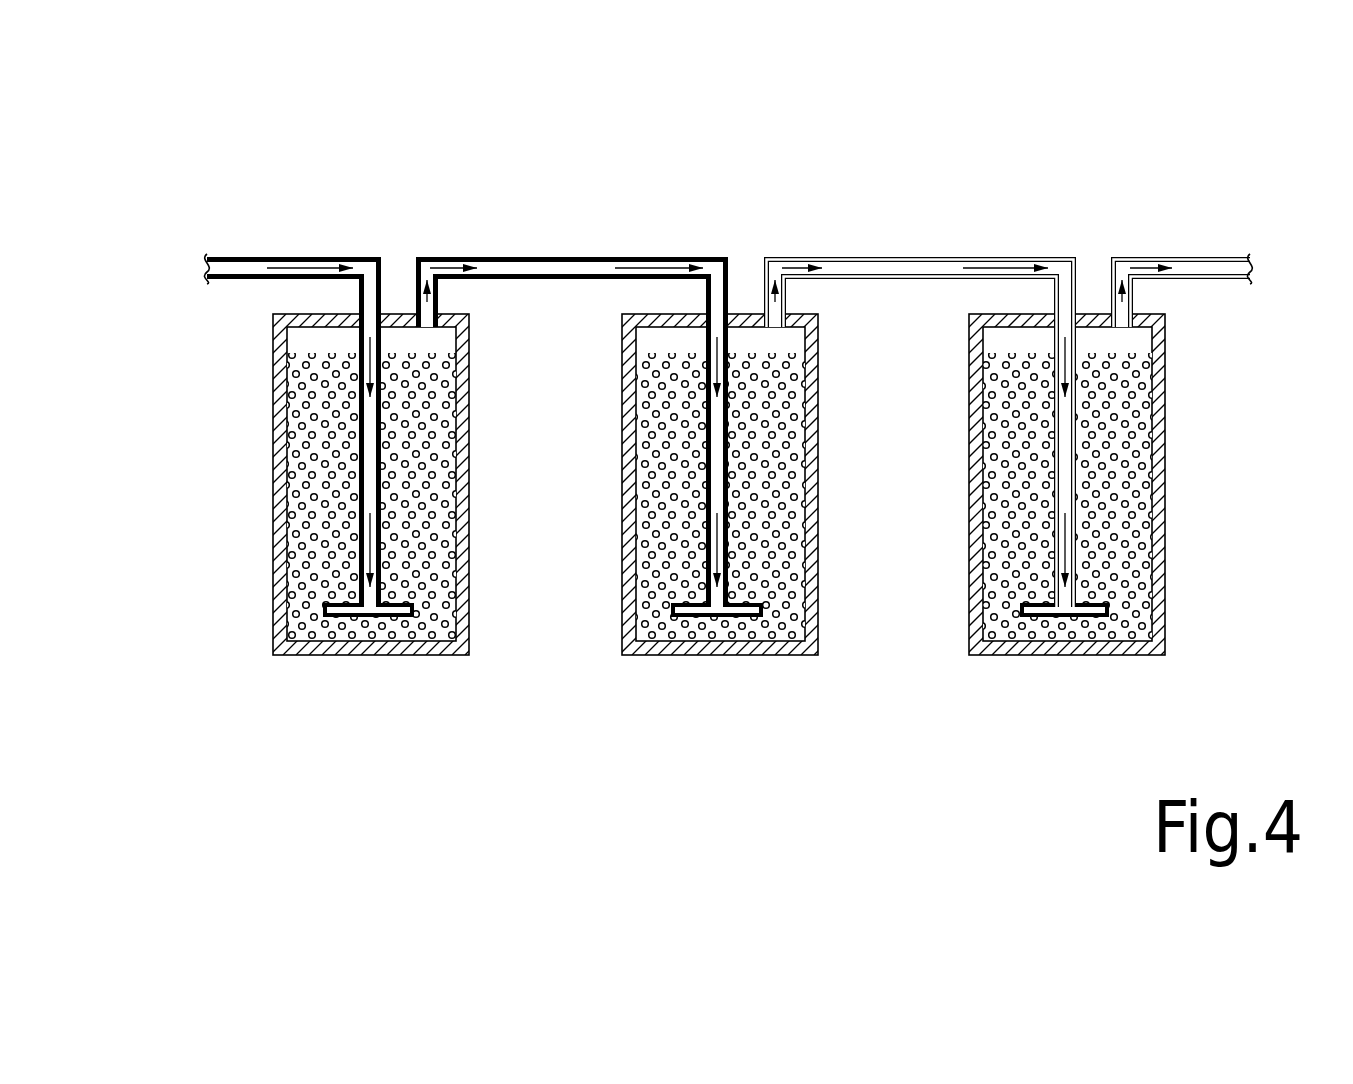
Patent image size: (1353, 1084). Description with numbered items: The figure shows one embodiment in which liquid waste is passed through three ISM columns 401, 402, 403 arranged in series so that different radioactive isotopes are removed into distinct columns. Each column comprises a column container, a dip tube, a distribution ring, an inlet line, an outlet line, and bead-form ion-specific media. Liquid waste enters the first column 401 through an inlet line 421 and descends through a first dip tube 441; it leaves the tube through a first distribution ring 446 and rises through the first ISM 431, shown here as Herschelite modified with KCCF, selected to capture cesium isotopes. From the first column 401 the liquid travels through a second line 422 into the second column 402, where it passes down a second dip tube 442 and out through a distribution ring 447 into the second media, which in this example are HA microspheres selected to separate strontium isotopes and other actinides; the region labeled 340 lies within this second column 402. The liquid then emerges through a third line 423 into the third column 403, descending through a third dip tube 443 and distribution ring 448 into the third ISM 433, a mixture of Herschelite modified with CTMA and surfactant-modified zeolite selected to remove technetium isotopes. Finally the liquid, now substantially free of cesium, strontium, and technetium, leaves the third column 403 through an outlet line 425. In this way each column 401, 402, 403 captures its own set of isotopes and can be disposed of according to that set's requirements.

The first column 401 is at (403, 541).
The second column 402 is at (718, 556).
The third column 403 is at (990, 546).
The inlet line 421 is at (278, 257).
The second line 422 is at (573, 257).
The third line 423 is at (930, 257).
The outlet line 425 is at (1183, 257).
The first ISM 431 is at (317, 452).
The first dip tube 441 is at (380, 445).
The liquid in second container 340 is at (640, 545).
The second dip tube 442 is at (727, 433).
The third ISM 433 is at (1127, 572).
The third dip tube 443 is at (1078, 442).
The first distribution ring 446 is at (347, 622).
The distribution ring 447 is at (743, 623).
The distribution ring 448 is at (1087, 617).